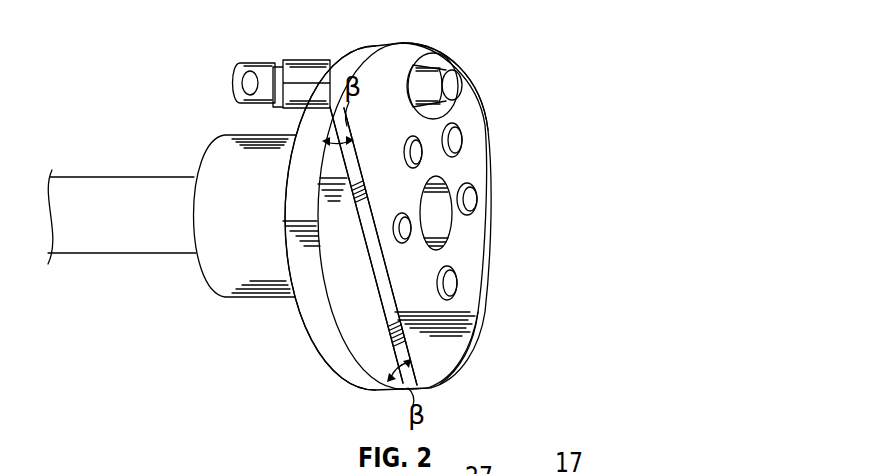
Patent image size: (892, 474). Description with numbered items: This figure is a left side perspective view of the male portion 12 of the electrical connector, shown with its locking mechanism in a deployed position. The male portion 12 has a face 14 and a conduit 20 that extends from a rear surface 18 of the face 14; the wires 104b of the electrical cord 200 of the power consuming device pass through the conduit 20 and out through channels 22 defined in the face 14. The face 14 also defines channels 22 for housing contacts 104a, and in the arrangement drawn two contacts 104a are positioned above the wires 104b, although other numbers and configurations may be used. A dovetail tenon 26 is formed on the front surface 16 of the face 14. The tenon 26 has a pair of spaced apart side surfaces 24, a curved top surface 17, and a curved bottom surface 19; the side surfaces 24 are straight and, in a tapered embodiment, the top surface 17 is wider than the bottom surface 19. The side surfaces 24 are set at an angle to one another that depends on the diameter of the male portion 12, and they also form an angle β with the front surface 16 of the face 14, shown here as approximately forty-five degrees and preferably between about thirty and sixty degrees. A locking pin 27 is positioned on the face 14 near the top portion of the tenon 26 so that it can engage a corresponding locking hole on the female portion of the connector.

The male portion 12 is at (566, 48).
The face 14 is at (362, 310).
The front surface 16 is at (372, 357).
The top surface 17 is at (363, 62).
The rear surface 18 is at (288, 307).
The bottom surface 19 is at (457, 360).
The conduit 20 is at (217, 263).
The channels 22 is at (417, 150).
The side surfaces 24 is at (361, 173).
The dovetail tenon 26 is at (465, 112).
The locking pin 27 is at (453, 87).
The contacts 104a is at (457, 137).
The wires 104b is at (397, 213).
The electrical cord 200 is at (132, 183).